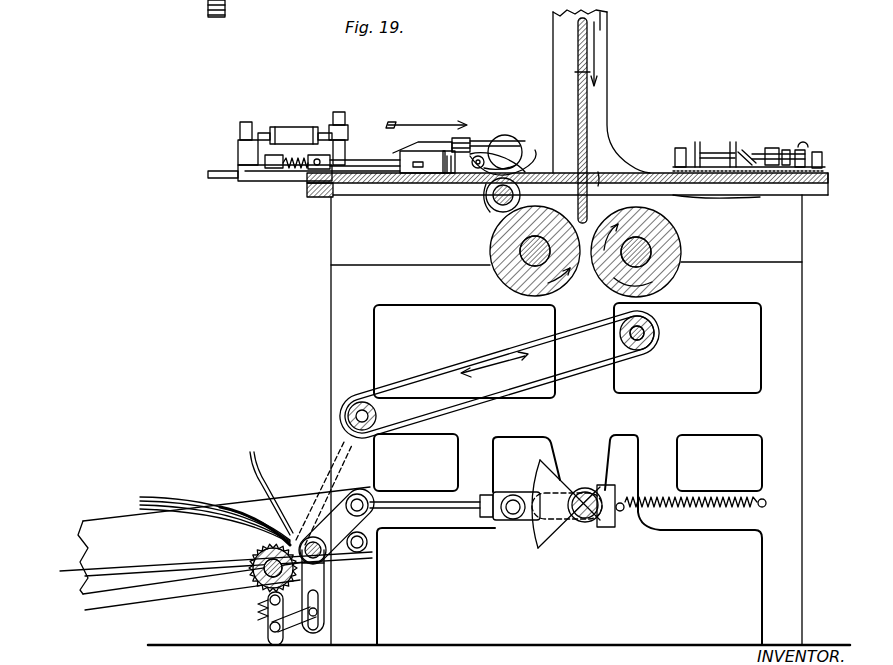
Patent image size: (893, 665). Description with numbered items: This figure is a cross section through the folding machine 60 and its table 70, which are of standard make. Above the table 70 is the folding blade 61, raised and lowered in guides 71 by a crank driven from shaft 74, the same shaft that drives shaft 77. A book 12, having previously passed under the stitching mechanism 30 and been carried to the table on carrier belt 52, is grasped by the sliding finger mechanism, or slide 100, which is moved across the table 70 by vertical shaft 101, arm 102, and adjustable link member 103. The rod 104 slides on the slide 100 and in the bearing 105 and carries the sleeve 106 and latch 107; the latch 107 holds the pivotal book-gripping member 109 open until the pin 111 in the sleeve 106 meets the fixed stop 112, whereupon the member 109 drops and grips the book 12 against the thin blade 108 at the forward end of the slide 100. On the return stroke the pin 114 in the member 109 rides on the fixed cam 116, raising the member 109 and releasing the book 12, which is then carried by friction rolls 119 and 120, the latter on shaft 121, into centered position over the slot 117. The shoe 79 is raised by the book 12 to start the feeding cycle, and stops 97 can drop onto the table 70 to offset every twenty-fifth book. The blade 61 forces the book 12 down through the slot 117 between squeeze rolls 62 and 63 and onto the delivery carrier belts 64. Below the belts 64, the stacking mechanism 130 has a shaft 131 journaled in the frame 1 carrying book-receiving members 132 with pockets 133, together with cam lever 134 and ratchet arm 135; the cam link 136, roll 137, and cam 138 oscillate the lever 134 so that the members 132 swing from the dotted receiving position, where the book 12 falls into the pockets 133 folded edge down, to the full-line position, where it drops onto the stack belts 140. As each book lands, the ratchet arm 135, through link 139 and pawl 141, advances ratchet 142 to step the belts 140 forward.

The frame 1 is at (343, 335).
The book 12 is at (660, 168).
The stitching mechanism 30 is at (226, 4).
The carrier belt 52 is at (797, 172).
The folding machine 60 is at (272, 280).
The folding blade 61 is at (582, 44).
The squeeze roll 62 is at (492, 249).
The squeeze roll 63 is at (662, 235).
The delivery carrier belts 64 is at (457, 362).
The table 70 is at (818, 180).
The guides 71 is at (590, 113).
The shaft 74 is at (660, 340).
The shaft 77 is at (672, 270).
The shoe 79 is at (745, 123).
The stops 97 is at (705, 118).
The slide 100 is at (218, 172).
The vertical shaft 101 is at (338, 147).
The arm 102 is at (332, 123).
The adjustable link member 103 is at (277, 135).
The rod 104 is at (345, 182).
The bearing 105 is at (280, 163).
The sleeve 106 is at (303, 170).
The latch 107 is at (423, 180).
The thin blade 108 is at (520, 167).
The book-gripping member 109 is at (516, 145).
The pin 111 is at (323, 165).
The fixed stop 112 is at (448, 180).
The pin 114 is at (450, 138).
The fixed cam 116 is at (483, 137).
The slot 117 is at (585, 205).
The friction rolls 119 is at (503, 136).
The friction rolls 120 is at (482, 200).
The shaft 121 is at (484, 198).
The stacking mechanism 130 is at (265, 430).
The shaft 131 is at (332, 557).
The book-receiving members 132 is at (247, 462).
The pockets 133 is at (275, 522).
The cam lever 134 is at (350, 523).
The ratchet arm 135 is at (317, 580).
The cam link 136 is at (453, 505).
The roll 137 is at (510, 497).
The cam 138 is at (590, 520).
The link 139 is at (295, 617).
The stack belts 140 is at (157, 543).
The pawl 141 is at (318, 582).
The ratchet 142 is at (257, 585).